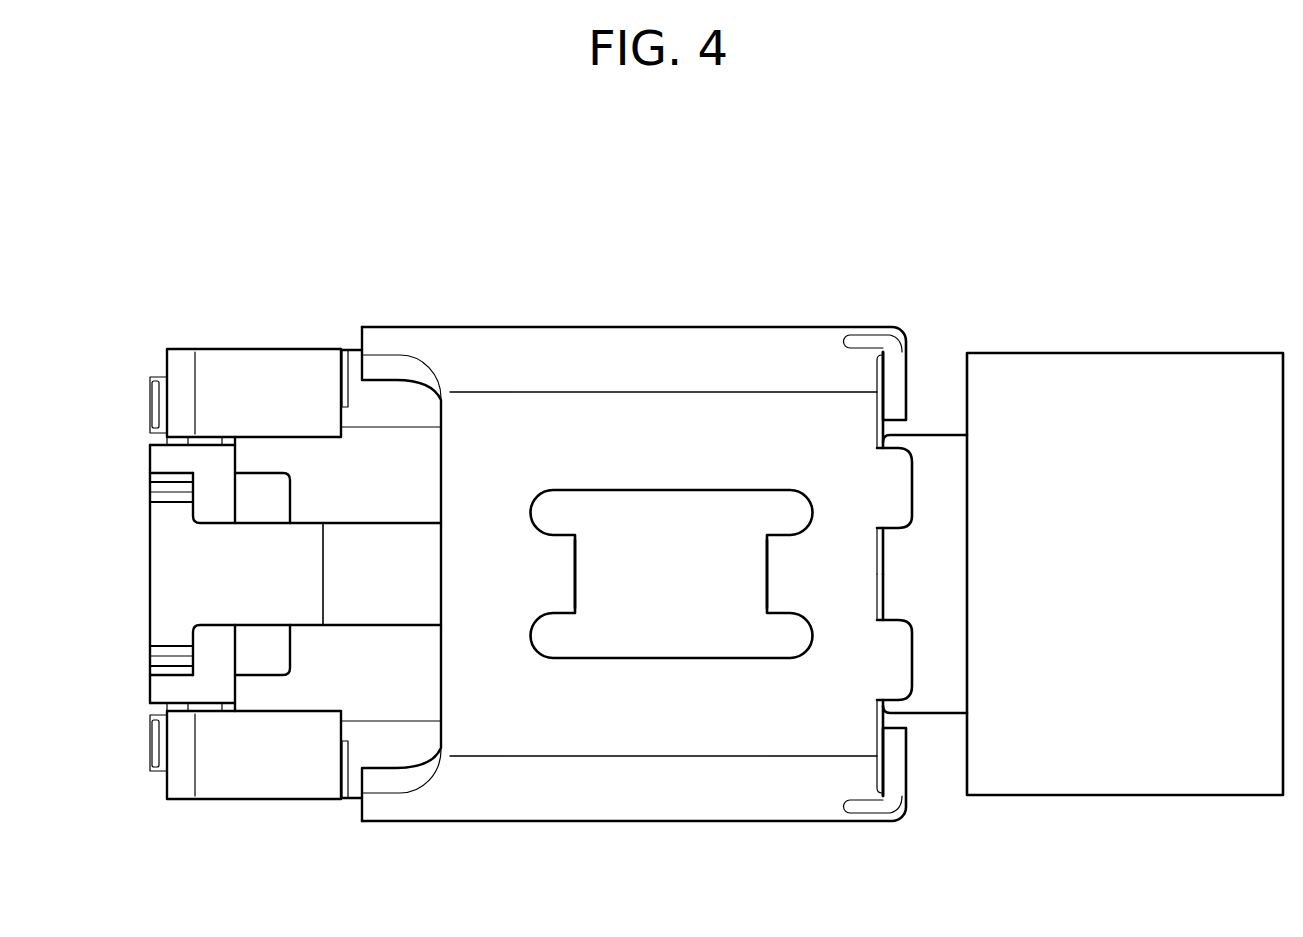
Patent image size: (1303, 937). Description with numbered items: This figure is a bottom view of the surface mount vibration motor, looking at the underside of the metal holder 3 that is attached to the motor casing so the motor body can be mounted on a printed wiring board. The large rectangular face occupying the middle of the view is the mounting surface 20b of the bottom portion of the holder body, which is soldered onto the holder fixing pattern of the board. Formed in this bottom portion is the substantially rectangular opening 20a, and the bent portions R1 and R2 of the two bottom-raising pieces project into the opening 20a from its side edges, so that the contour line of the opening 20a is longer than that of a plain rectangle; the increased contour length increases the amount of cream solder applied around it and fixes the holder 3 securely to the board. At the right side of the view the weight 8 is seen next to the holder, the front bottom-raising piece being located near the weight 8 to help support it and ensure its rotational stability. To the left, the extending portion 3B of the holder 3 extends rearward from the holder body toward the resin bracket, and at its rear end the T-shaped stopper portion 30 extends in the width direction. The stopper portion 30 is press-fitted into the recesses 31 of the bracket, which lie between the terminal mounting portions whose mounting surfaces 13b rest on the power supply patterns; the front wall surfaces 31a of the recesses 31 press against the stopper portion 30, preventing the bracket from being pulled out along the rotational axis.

The metal holder 3 is at (722, 327).
The extending portion 3B is at (376, 522).
The weight 8 is at (1118, 350).
The mounting surface 13b is at (264, 372).
The opening 20a is at (670, 510).
The mounting surface 20b is at (575, 418).
The stopper portion 30 is at (170, 577).
The recess 31 is at (172, 472).
The front wall surface 31a is at (188, 503).
The bent portion R1 is at (766, 575).
The bent portion R2 is at (577, 575).